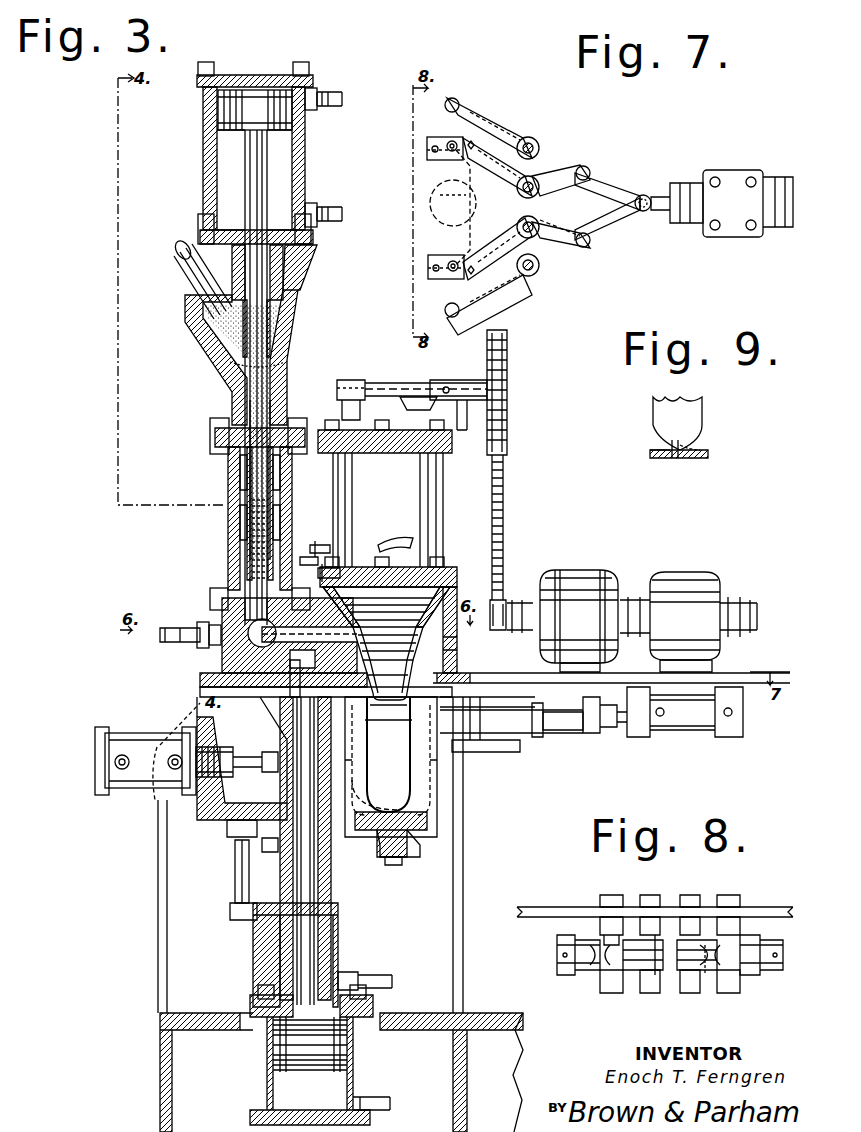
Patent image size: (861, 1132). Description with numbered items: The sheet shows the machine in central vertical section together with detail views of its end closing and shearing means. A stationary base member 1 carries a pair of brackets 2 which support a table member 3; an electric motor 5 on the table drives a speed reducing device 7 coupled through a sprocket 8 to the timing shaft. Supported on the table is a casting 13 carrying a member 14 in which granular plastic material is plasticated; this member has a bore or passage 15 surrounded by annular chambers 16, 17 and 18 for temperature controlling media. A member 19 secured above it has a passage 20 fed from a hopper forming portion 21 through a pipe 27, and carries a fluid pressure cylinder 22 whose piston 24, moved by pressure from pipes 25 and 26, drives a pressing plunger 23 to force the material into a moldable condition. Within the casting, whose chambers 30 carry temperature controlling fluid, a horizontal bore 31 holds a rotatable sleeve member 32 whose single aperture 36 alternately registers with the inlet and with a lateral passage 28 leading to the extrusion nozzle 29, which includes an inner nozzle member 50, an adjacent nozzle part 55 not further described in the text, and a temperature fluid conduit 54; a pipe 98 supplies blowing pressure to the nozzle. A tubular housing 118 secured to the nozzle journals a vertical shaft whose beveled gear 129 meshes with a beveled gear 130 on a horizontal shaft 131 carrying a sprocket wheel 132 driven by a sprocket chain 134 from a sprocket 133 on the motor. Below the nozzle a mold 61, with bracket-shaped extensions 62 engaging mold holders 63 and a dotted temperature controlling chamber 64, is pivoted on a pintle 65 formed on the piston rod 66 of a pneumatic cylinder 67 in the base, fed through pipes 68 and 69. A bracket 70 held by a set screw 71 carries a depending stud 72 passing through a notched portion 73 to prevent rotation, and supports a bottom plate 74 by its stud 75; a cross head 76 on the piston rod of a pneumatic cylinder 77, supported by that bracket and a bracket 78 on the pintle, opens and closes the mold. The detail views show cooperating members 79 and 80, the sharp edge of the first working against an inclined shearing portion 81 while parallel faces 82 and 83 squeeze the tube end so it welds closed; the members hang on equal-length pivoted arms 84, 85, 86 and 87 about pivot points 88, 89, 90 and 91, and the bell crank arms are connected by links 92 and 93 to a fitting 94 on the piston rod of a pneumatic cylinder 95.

In FIG. 3, the base member 1 is at (460, 1073).
In FIG. 3, the brackets 2 is at (465, 880).
In FIG. 3, the table member 3 is at (497, 678).
In FIG. 8, the table member 3 is at (530, 917).
In FIG. 3, the electric motor 5 is at (578, 578).
In FIG. 3, the speed reducing device 7 is at (692, 578).
In FIG. 3, the sprocket 8 is at (750, 606).
In FIG. 3, the casting 13 is at (205, 626).
In FIG. 3, the plasticating member 14 is at (230, 479).
In FIG. 3, the bore or passage 15 is at (247, 463).
In FIG. 3, the annular chamber 16 is at (283, 469).
In FIG. 3, the annular chamber 17 is at (283, 506).
In FIG. 3, the annular chamber 18 is at (232, 557).
In FIG. 3, the hopper member 19 is at (255, 322).
In FIG. 3, the passage 20 is at (250, 402).
In FIG. 3, the hopper forming portion 21 is at (228, 330).
In FIG. 3, the fluid pressure cylinder 22 is at (203, 125).
In FIG. 3, the pressing plunger 23 is at (295, 312).
In FIG. 3, the piston 24 is at (258, 105).
In FIG. 3, the pipe 25 is at (330, 95).
In FIG. 3, the pipe 26 is at (325, 212).
In FIG. 3, the supply pipe 27 is at (181, 248).
In FIG. 3, the lateral passage 28 is at (348, 618).
In FIG. 3, the extrusion nozzle 29 is at (458, 660).
In FIG. 3, the temperature controlling chambers 30 is at (322, 546).
In FIG. 3, the cylindrical bore 31 is at (197, 633).
In FIG. 3, the rotatable sleeve member 32 is at (160, 636).
In FIG. 3, the aperture 36 is at (209, 648).
In FIG. 3, the inner nozzle member 50 is at (388, 676).
In FIG. 3, the conduit 54 is at (325, 560).
In FIG. 3, the nozzle body 55 is at (383, 650).
In FIG. 3, the mold 61 is at (440, 806).
In FIG. 3, the bracket-shaped extensions 62 is at (495, 741).
In FIG. 3, the mold holders 63 is at (478, 757).
In FIG. 3, the temperature controlling chamber 64 is at (432, 813).
In FIG. 3, the pintle 65 is at (331, 852).
In FIG. 3, the piston rod 66 is at (300, 920).
In FIG. 3, the pneumatic cylinder 67 is at (355, 1050).
In FIG. 3, the pipe 68 is at (372, 974).
In FIG. 3, the pipe 69 is at (372, 1100).
In FIG. 3, the bracket 70 is at (212, 822).
In FIG. 3, the set screw 71 is at (268, 853).
In FIG. 3, the stud 72 is at (235, 870).
In FIG. 3, the bore or notched portion 73 is at (230, 908).
In FIG. 3, the bottom plate 74 is at (402, 860).
In FIG. 3, the stud 75 is at (390, 866).
In FIG. 3, the cross head 76 is at (262, 752).
In FIG. 3, the pneumatic cylinder 77 is at (132, 733).
In FIG. 3, the bracket 78 is at (205, 700).
In FIG. 7, the shearing and end closing member 79 is at (437, 137).
In FIG. 9, the shearing and end closing member 79 is at (668, 454).
In FIG. 8, the shearing and end closing member 79 is at (590, 970).
In FIG. 7, the shearing and end closing member 80 is at (440, 279).
In FIG. 9, the shearing and end closing member 80 is at (700, 450).
In FIG. 8, the shearing and end closing member 80 is at (750, 975).
In FIG. 7, the inclined shearing portion 81 is at (472, 258).
In FIG. 9, the inclined shearing portion 81 is at (675, 458).
In FIG. 8, the inclined shearing portion 81 is at (690, 975).
In FIG. 7, the forward face 82 is at (453, 203).
In FIG. 9, the forward face 82 is at (665, 440).
In FIG. 8, the forward face 82 is at (605, 970).
In FIG. 7, the face 83 is at (475, 250).
In FIG. 9, the face 83 is at (682, 458).
In FIG. 8, the face 83 is at (708, 945).
In FIG. 7, the pivoted arm 84 is at (480, 115).
In FIG. 3, the pivoted arm 85 is at (500, 701).
In FIG. 7, the pivoted arm 85 is at (490, 152).
In FIG. 8, the pivoted arm 85 is at (635, 975).
In FIG. 7, the pivoted arm 86 is at (500, 300).
In FIG. 7, the pivoted arm 87 is at (542, 270).
In FIG. 8, the pivoted arm 87 is at (712, 975).
In FIG. 7, the pivot point 88 is at (540, 148).
In FIG. 8, the pivot point 88 is at (608, 895).
In FIG. 7, the pivot point 89 is at (545, 200).
In FIG. 8, the pivot point 89 is at (648, 895).
In FIG. 7, the pivot point 90 is at (540, 232).
In FIG. 8, the pivot point 90 is at (730, 895).
In FIG. 7, the pivot point 91 is at (565, 238).
In FIG. 8, the pivot point 91 is at (690, 895).
In FIG. 3, the link 92 is at (560, 735).
In FIG. 7, the link 92 is at (612, 183).
In FIG. 7, the link 93 is at (620, 224).
In FIG. 3, the fitting 94 is at (605, 735).
In FIG. 7, the fitting 94 is at (670, 195).
In FIG. 3, the pneumatic cylinder 95 is at (675, 745).
In FIG. 7, the pneumatic cylinder 95 is at (740, 222).
In FIG. 3, the pipe 98 is at (400, 540).
In FIG. 3, the tubular housing 118 is at (435, 470).
In FIG. 3, the beveled gear 129 is at (372, 383).
In FIG. 3, the beveled gear 130 is at (440, 392).
In FIG. 3, the horizontal shaft 131 is at (360, 380).
In FIG. 3, the sprocket wheel 132 is at (507, 350).
In FIG. 3, the sprocket 133 is at (508, 612).
In FIG. 3, the sprocket chain 134 is at (505, 480).